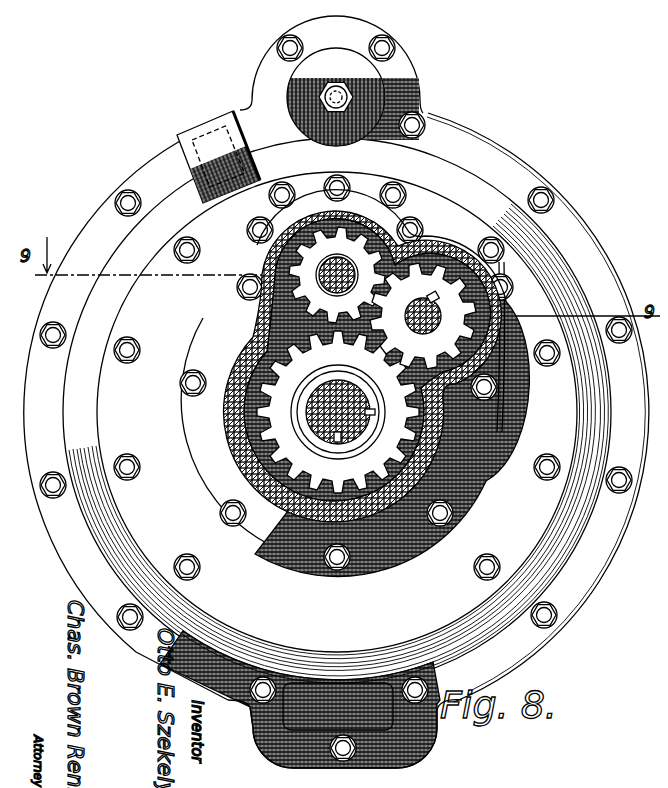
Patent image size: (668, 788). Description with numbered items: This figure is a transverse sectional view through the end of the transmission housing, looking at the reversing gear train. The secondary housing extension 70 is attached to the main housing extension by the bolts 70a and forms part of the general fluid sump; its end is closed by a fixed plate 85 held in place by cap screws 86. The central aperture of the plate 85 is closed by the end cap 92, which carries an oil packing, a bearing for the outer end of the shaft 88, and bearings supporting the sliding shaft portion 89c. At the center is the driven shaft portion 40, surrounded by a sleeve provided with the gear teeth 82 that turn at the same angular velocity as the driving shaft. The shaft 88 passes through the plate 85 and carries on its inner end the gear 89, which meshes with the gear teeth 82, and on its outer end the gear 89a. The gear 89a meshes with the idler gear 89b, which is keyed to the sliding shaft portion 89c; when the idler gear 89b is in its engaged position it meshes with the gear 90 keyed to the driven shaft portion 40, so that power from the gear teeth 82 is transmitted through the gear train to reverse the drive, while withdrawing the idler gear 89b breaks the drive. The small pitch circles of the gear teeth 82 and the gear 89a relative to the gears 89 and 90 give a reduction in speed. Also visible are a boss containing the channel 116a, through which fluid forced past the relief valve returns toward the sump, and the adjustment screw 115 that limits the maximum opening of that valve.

The driven shaft portion 40 is at (312, 416).
The secondary housing extension 70 is at (80, 392).
The bolts 70a is at (567, 621).
The gear teeth 82 is at (257, 453).
The fixed plate 85 is at (338, 427).
The cap screws 86 is at (129, 472).
The shaft 88 is at (318, 267).
The gear 89 is at (273, 312).
The gear 89a is at (337, 275).
The idler gear 89b is at (427, 250).
The sliding shaft portion 89c is at (423, 316).
The gear 90 is at (280, 347).
The end cap 92 is at (273, 509).
The adjustment screw 115 is at (352, 93).
The channel 116a is at (202, 133).